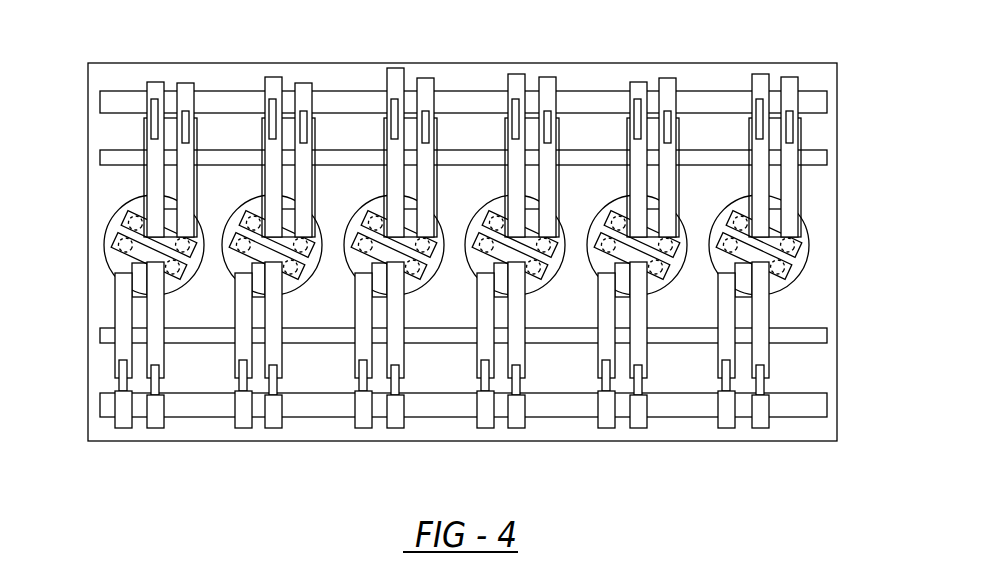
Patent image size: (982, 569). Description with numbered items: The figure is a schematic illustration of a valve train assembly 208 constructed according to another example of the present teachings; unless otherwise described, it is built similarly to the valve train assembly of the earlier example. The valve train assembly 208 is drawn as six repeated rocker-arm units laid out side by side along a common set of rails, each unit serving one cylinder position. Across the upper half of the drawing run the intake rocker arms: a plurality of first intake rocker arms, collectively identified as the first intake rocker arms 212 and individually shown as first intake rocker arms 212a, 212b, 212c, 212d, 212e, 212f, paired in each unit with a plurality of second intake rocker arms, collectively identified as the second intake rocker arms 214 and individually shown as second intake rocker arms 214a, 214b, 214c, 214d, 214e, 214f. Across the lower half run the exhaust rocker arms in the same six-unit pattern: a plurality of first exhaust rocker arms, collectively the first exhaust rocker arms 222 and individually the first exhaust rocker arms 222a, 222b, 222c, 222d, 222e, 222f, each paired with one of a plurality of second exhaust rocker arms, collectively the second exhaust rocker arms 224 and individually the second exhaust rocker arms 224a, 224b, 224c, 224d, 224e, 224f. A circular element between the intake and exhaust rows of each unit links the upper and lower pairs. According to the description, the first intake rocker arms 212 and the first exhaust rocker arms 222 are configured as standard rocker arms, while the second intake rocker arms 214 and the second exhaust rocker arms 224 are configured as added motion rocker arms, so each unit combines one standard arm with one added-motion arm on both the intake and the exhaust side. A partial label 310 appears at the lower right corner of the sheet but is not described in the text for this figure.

The valve train assembly 208 is at (791, 42).
The first intake rocker arms 212 is at (138, 188).
The first intake rocker arm 212a is at (152, 178).
The first intake rocker arm 212b is at (270, 150).
The first intake rocker arm 212c is at (392, 178).
The first intake rocker arm 212d is at (513, 177).
The first intake rocker arm 212e is at (633, 145).
The first intake rocker arm 212f is at (750, 175).
The second intake rocker arms 214 is at (202, 185).
The second intake rocker arm 214a is at (190, 176).
The second intake rocker arm 214b is at (303, 180).
The second intake rocker arm 214c is at (430, 158).
The second intake rocker arm 214d is at (547, 178).
The second intake rocker arm 214e is at (672, 183).
The second intake rocker arm 214f is at (792, 177).
The first exhaust rocker arms 222 is at (173, 372).
The first exhaust rocker arm 222a is at (157, 332).
The first exhaust rocker arm 222b is at (283, 353).
The first exhaust rocker arm 222c is at (398, 350).
The first exhaust rocker arm 222d is at (517, 350).
The first exhaust rocker arm 222e is at (638, 353).
The first exhaust rocker arm 222f is at (762, 353).
The second exhaust rocker arms 224 is at (109, 313).
The second exhaust rocker arm 224a is at (122, 350).
The second exhaust rocker arm 224b is at (237, 353).
The second exhaust rocker arm 224c is at (360, 350).
The second exhaust rocker arm 224d is at (477, 353).
The second exhaust rocker arm 224e is at (605, 348).
The second exhaust rocker arm 224f is at (727, 345).
The adjacent figure label (partial) 310 is at (856, 568).